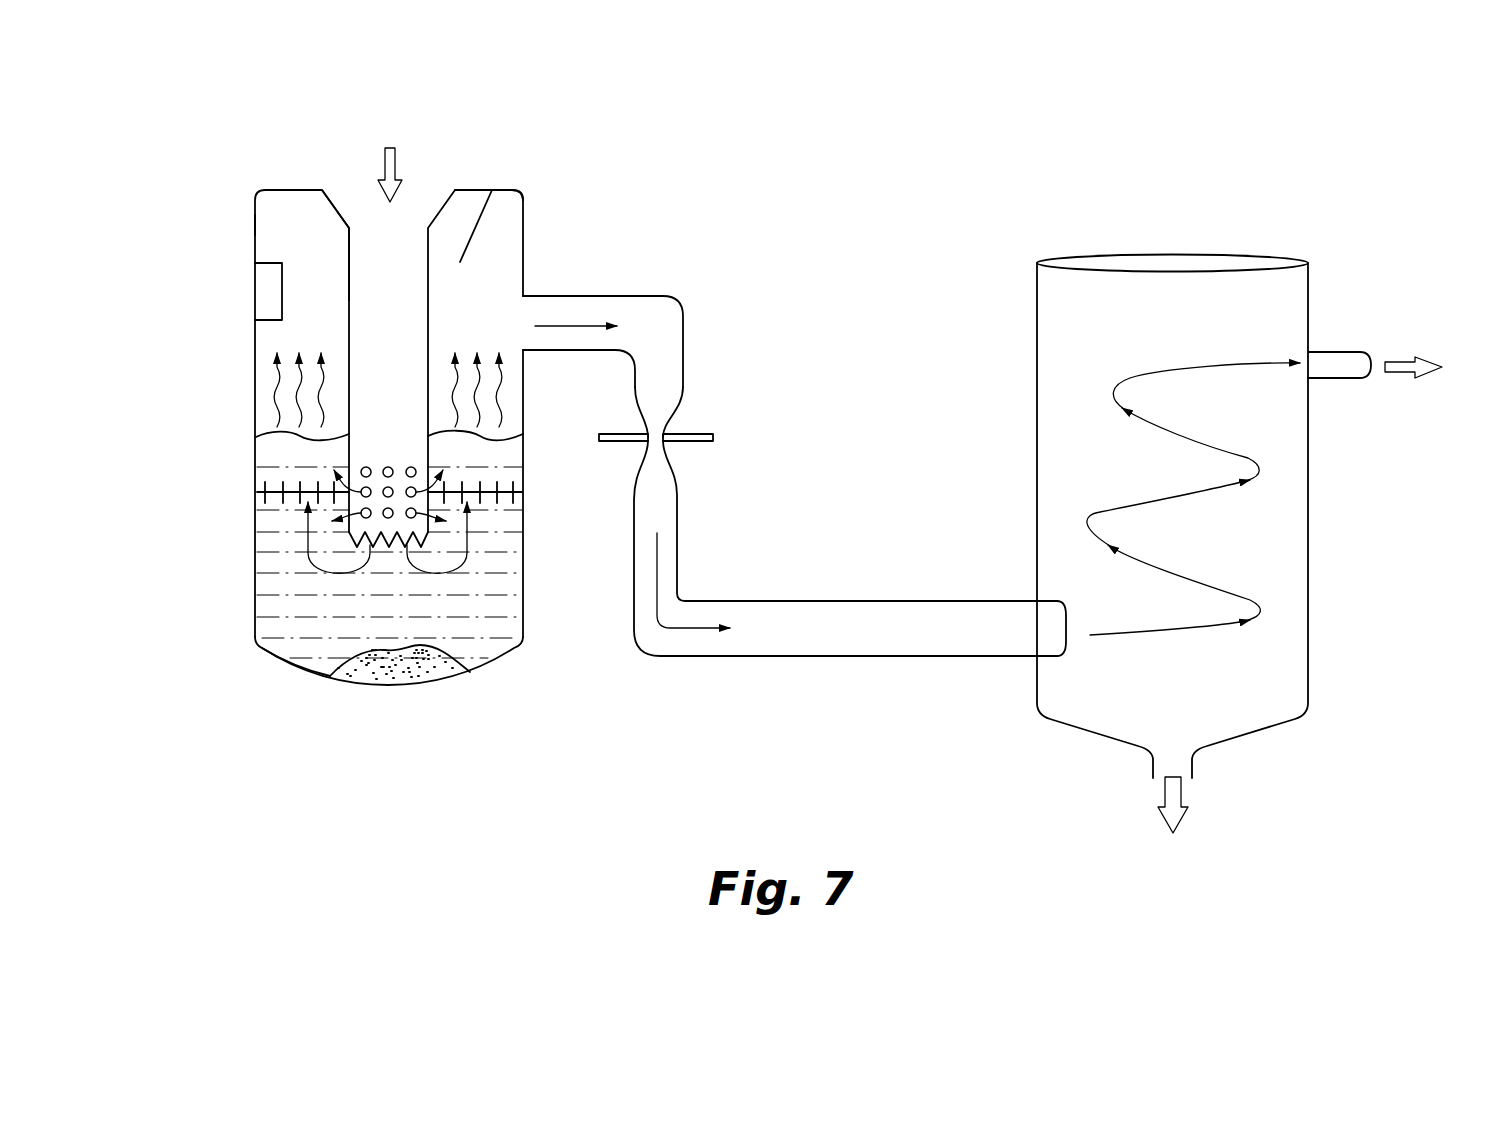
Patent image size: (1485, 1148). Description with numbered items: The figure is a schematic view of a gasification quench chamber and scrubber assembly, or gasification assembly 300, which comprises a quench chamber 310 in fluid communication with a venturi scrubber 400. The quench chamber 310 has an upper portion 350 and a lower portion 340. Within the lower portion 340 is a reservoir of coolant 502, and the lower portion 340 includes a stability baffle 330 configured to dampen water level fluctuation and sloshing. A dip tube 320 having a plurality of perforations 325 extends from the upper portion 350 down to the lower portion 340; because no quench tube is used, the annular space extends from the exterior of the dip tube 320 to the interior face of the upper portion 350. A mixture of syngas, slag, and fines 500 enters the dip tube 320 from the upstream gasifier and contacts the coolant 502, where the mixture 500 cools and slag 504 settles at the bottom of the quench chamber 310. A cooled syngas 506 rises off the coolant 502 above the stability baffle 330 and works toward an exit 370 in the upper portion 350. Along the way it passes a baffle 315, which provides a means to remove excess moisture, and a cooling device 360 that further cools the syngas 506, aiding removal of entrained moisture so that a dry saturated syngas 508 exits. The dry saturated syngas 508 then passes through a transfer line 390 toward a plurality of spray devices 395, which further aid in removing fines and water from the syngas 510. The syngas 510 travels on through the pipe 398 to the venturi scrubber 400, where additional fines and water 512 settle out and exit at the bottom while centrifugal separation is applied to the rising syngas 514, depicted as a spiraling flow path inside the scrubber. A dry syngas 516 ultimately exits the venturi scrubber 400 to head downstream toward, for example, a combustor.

The gasification assembly 300 is at (523, 406).
The quench chamber 310 is at (236, 168).
The baffle 315 is at (483, 213).
The dip tube 320 is at (335, 200).
The perforations 325 is at (411, 467).
The stability baffle 330 is at (478, 470).
The lower portion 340 is at (225, 628).
The upper portion 350 is at (222, 218).
The cooling device 360 is at (253, 278).
The exit 370 is at (545, 293).
The transfer line 390 is at (700, 293).
The spray devices 395 is at (595, 437).
The transfer pipe 398 is at (648, 660).
The venturi scrubber 400 is at (1330, 252).
The mixture of syngas, slag, and fines 500 is at (405, 165).
The coolant 502 is at (500, 588).
The slag 504 is at (360, 683).
The cooled syngas 506 is at (272, 380).
The dry saturated syngas 508 is at (585, 326).
The syngas 510 is at (657, 570).
The fines and water 512 is at (1190, 820).
The rising syngas 514 is at (1125, 381).
The dry syngas 516 is at (1413, 345).